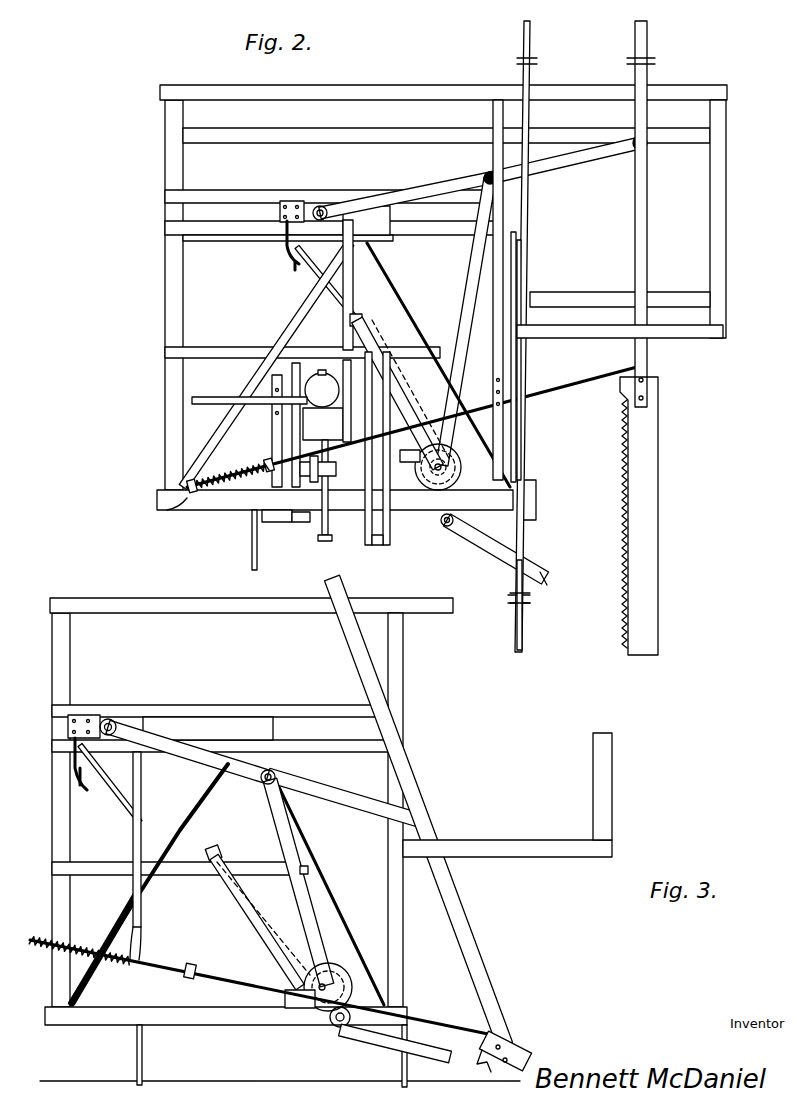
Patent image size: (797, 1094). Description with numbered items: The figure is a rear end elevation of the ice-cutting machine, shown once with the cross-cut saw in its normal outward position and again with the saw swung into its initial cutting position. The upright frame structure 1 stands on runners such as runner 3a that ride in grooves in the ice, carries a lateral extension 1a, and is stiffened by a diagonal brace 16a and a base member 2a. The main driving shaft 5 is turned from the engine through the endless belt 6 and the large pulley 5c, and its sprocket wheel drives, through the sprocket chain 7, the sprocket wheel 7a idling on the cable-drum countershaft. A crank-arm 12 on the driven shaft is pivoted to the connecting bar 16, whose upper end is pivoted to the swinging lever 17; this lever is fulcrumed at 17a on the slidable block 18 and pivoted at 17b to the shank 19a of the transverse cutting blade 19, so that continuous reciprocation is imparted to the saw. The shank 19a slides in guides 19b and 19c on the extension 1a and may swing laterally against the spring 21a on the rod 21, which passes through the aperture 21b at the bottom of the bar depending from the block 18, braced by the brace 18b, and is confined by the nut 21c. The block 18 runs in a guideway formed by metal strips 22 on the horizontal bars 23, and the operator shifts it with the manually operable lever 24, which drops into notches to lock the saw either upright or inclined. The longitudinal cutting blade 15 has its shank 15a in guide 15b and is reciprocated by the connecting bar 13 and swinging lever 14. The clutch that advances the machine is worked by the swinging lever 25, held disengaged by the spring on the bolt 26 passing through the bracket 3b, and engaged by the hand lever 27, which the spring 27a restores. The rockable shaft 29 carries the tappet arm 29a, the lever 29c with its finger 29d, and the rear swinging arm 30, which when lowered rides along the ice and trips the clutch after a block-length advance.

In FIG. 2, the upright frame structure 1 is at (168, 316).
In FIG. 3, the upright frame structure 1 is at (405, 674).
In FIG. 2, the lateral extension 1a is at (727, 225).
In FIG. 2, the bracket 2a is at (167, 511).
In FIG. 2, the runner 3a is at (252, 555).
In FIG. 3, the runner 3a is at (137, 1055).
In FIG. 2, the perforated plate or bracket 3b is at (520, 543).
In FIG. 2, the main driving shaft 5 is at (352, 434).
In FIG. 2, the pulley 5c is at (386, 540).
In FIG. 2, the endless belt 6 is at (375, 542).
In FIG. 2, the endless belt or sprocket chain 7 is at (330, 492).
In FIG. 2, the sprocket wheel 7a is at (330, 540).
In FIG. 2, the crank-arm or eccentric 12 is at (432, 490).
In FIG. 3, the crank-arm or eccentric 12 is at (318, 968).
In FIG. 2, the connecting bar or rod 13 is at (524, 272).
In FIG. 2, the vertically swinging lever 14 is at (520, 248).
In FIG. 2, the longitudinal cutting blade 15 is at (522, 628).
In FIG. 3, the longitudinal cutting blade 15 is at (520, 605).
In FIG. 2, the shank 15a is at (531, 36).
In FIG. 2, the guide 15b is at (532, 135).
In FIG. 2, the connecting bar or rod 16 is at (468, 270).
In FIG. 3, the connecting bar or rod 16 is at (306, 855).
In FIG. 2, the brace 16a is at (352, 268).
In FIG. 3, the brace 16a is at (133, 845).
In FIG. 2, the vertically swinging lever 17 is at (568, 162).
In FIG. 3, the vertically swinging lever 17 is at (330, 800).
In FIG. 2, the fulcrum 17a is at (327, 208).
In FIG. 3, the fulcrum 17a is at (112, 720).
In FIG. 2, the pivot 17b is at (648, 150).
In FIG. 3, the pivot 17b is at (430, 822).
In FIG. 2, the slidable block 18 is at (303, 204).
In FIG. 3, the slidable block 18 is at (90, 712).
In FIG. 2, the brace 18b is at (305, 270).
In FIG. 3, the brace 18b is at (115, 800).
In FIG. 2, the transverse cutting blade 19 is at (652, 398).
In FIG. 3, the transverse cutting blade 19 is at (512, 1058).
In FIG. 2, the shank 19a is at (648, 40).
In FIG. 2, the guide 19b is at (660, 97).
In FIG. 3, the guide 19b is at (372, 604).
In FIG. 2, the guide 19c is at (672, 340).
In FIG. 3, the guide 19c is at (508, 850).
In FIG. 2, the rod 21 is at (183, 493).
In FIG. 3, the rod 21 is at (212, 978).
In FIG. 2, the spring 21a is at (215, 482).
In FIG. 3, the spring 21a is at (125, 970).
In FIG. 3, the aperture or guide 21b is at (138, 960).
In FIG. 2, the nut or collar 21c is at (205, 484).
In FIG. 3, the nut or collar 21c is at (79, 946).
In FIG. 2, the metal strips 22 is at (200, 197).
In FIG. 3, the metal strips 22 is at (195, 710).
In FIG. 2, the horizontal bars 23 is at (378, 196).
In FIG. 3, the horizontal bars 23 is at (280, 706).
In FIG. 2, the manually operable lever 24 is at (290, 260).
In FIG. 3, the manually operable lever 24 is at (81, 787).
In FIG. 2, the swinging lever 25 is at (270, 522).
In FIG. 2, the guide rod or bolt 26 is at (249, 400).
In FIG. 2, the hand lever 27 is at (290, 435).
In FIG. 2, the spring 27a is at (300, 523).
In FIG. 2, the shaft 29 is at (448, 528).
In FIG. 3, the shaft 29 is at (335, 1028).
In FIG. 2, the swinging tappet arm 29a is at (350, 321).
In FIG. 2, the lever 29c is at (385, 368).
In FIG. 3, the lever 29c is at (260, 910).
In FIG. 3, the lateral pin or finger 29d is at (222, 853).
In FIG. 2, the swinging arm 30 is at (538, 568).
In FIG. 3, the swinging arm 30 is at (378, 1043).